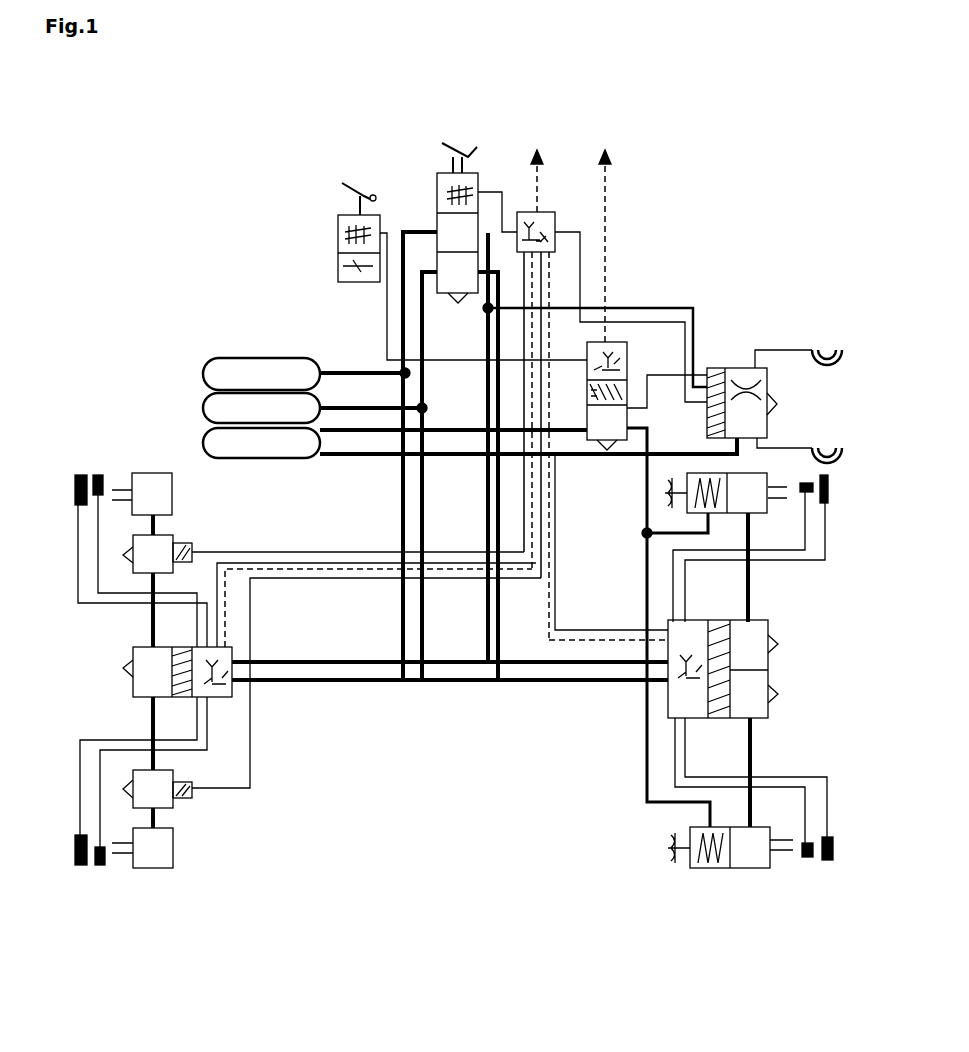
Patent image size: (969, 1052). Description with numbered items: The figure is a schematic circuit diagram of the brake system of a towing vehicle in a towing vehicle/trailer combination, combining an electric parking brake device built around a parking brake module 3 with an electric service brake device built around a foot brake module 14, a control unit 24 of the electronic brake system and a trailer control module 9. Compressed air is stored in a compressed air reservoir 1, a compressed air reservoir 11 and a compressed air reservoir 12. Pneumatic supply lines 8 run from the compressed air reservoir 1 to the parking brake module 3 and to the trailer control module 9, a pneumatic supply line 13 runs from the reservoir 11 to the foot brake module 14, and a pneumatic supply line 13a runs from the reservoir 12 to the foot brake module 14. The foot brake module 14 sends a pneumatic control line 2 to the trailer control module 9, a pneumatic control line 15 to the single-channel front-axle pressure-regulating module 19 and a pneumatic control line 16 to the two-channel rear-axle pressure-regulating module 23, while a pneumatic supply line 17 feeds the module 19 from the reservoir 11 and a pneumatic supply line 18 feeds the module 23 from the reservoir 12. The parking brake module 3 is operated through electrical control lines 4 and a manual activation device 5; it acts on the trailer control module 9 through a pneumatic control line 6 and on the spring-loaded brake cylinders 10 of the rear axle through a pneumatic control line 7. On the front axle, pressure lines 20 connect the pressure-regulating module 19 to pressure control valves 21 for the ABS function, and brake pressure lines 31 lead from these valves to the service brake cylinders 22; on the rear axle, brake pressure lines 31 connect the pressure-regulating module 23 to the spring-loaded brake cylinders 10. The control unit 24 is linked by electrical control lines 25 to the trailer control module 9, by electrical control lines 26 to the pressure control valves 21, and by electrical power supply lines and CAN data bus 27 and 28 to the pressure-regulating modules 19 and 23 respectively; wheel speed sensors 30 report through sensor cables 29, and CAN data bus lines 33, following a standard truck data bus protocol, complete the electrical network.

The compressed air reservoir 1 is at (261, 443).
The pneumatic control line 2 is at (595, 335).
The parking brake module 3 is at (615, 393).
The electrical control lines 4 is at (483, 310).
The manual activation device 5 is at (351, 232).
The pneumatic control line 6 is at (667, 391).
The pneumatic control line 7 is at (668, 627).
The pneumatic supply lines 8 is at (528, 442).
The trailer control module 9 is at (774, 406).
The spring-loaded brake cylinders 10 is at (729, 670).
The compressed air reservoir 11 is at (306, 374).
The compressed air reservoir 12 is at (315, 408).
The pneumatic supply line 13 is at (420, 456).
The pneumatic supply line 13a is at (437, 476).
The foot brake module 14 is at (457, 223).
The pneumatic control line 15 is at (488, 427).
The pneumatic control line 16 is at (501, 476).
The pneumatic supply line 17 is at (450, 639).
The pneumatic supply line 18 is at (450, 630).
The front-axle pressure-regulating module 19 is at (329, 630).
The pressure lines 20 is at (132, 671).
The pressure control valves 21 is at (157, 671).
The service brake cylinder 22 is at (142, 670).
The two-channel pressure-regulating module 23 is at (723, 669).
The control unit 24 is at (612, 418).
The electrical control lines 25 is at (571, 332).
The electrical control lines 26 is at (366, 660).
The electrical power supply lines and CAN data bus 27 is at (361, 607).
The electrical power supply lines and CAN data bus 28 is at (608, 547).
The sensor cable 29 is at (454, 669).
The wheel speed sensors 30 is at (451, 670).
The brake pressure lines 31 is at (470, 671).
The CAN data bus lines 33 is at (555, 246).